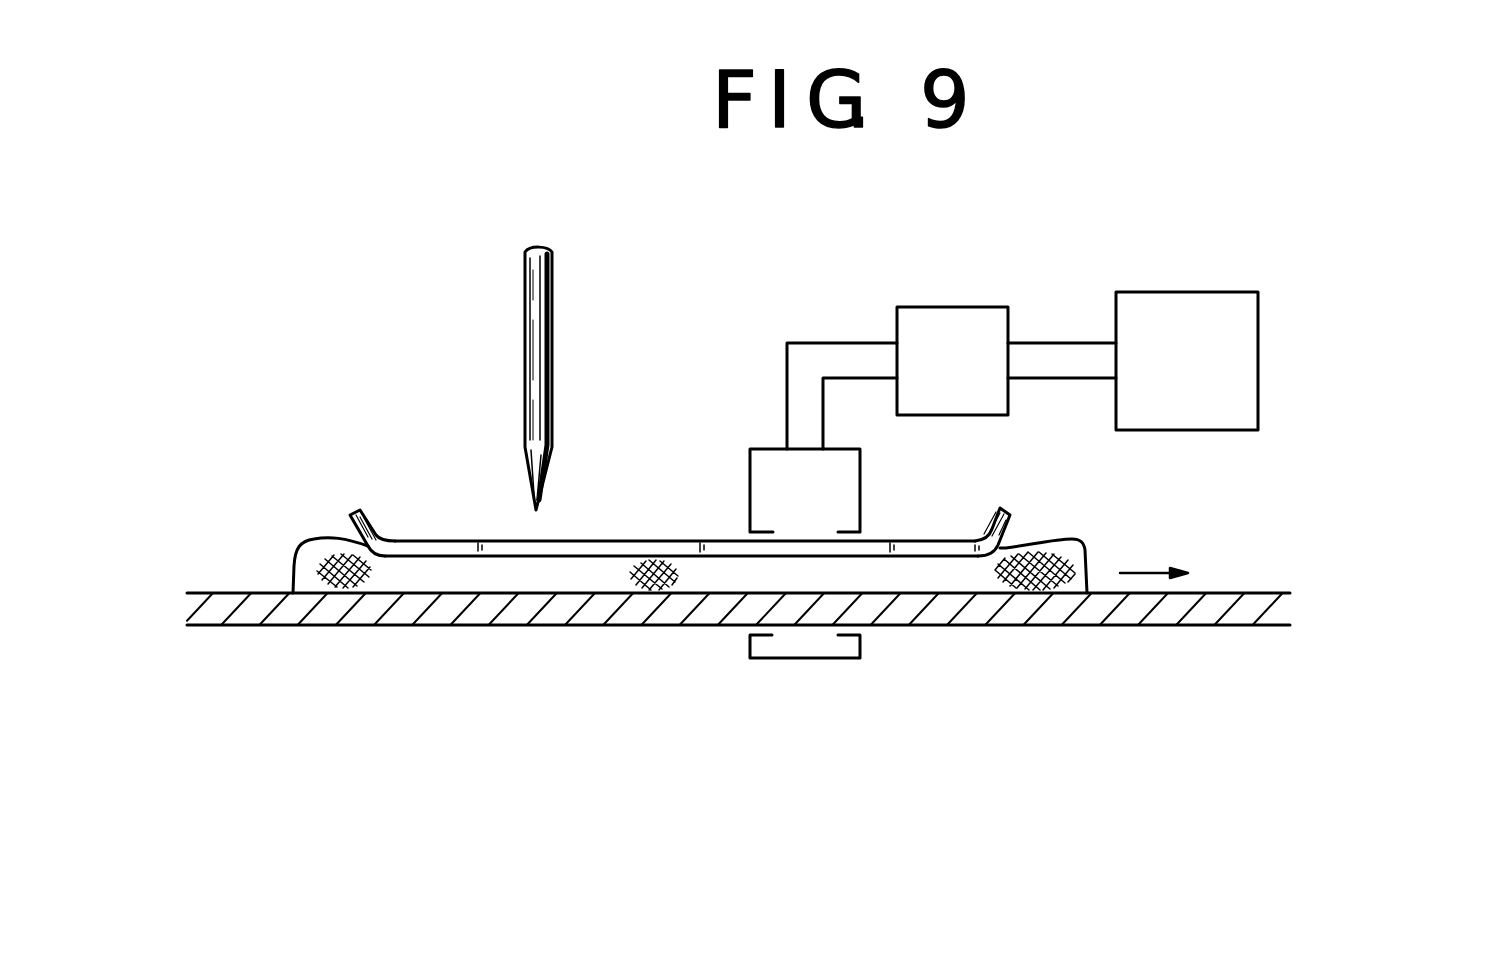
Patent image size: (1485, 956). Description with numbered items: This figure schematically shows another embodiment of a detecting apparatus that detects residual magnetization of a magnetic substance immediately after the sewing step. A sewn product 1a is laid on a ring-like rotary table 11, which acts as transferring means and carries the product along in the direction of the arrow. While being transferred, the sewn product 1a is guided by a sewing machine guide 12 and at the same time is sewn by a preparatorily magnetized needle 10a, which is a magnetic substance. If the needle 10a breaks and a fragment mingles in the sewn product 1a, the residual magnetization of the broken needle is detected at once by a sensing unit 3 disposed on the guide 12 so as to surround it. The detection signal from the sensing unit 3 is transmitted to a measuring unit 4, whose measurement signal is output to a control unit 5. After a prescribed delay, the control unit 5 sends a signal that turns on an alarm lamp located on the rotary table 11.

The sewn product 1a is at (733, 580).
The sensing unit 3 is at (860, 478).
The measuring unit 4 is at (950, 306).
The control unit 5 is at (1183, 292).
The needle 10a is at (552, 278).
The rotary table 11 is at (1250, 593).
The sewing machine guide 12 is at (623, 541).